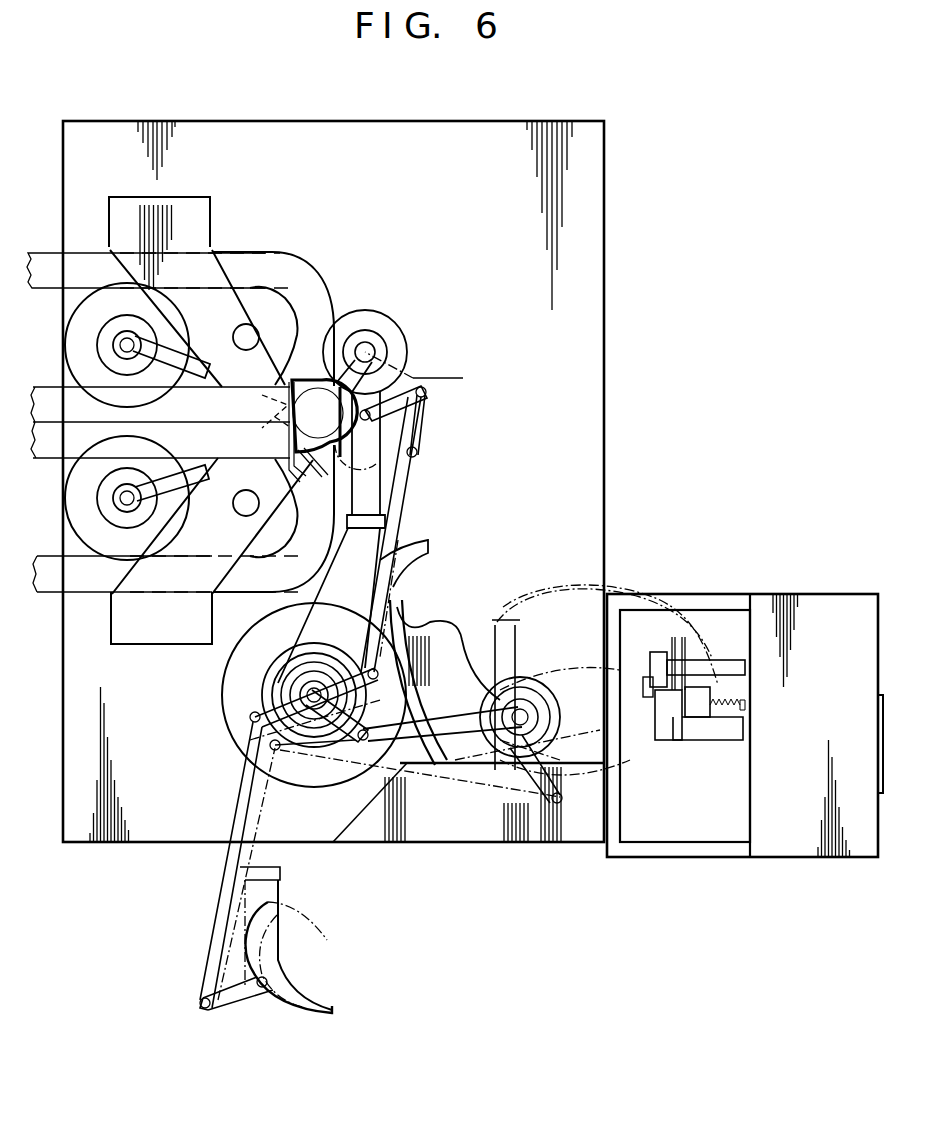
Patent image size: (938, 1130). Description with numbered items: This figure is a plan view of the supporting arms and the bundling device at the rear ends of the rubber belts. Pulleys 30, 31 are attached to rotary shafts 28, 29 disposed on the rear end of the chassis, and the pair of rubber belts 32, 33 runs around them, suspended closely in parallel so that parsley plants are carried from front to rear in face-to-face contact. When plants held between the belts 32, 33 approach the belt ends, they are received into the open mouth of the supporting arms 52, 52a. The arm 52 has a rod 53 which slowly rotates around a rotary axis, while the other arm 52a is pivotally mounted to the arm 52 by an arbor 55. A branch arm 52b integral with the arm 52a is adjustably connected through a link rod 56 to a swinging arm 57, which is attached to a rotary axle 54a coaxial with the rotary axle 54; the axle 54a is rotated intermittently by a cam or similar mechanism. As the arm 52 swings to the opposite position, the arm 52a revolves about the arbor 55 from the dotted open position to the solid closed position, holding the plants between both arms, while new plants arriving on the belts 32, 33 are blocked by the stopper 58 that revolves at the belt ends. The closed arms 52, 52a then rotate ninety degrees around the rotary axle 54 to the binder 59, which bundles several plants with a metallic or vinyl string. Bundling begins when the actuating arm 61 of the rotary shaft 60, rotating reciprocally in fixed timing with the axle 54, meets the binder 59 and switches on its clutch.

The rotary shaft 28 is at (240, 328).
The rotary shaft 29 is at (240, 510).
The pulley 30 is at (294, 318).
The pulley 31 is at (290, 507).
The rubber belt 32 is at (284, 262).
The rubber belt 33 is at (245, 580).
The supporting arm 52 is at (315, 384).
The supporting arm 52a is at (296, 442).
The branch arm 52b is at (400, 418).
The rod 53 is at (358, 590).
The rotary axle 54 is at (278, 690).
The rotary axle 54a is at (314, 683).
The arbor 55 is at (360, 413).
The link rod 56 is at (412, 486).
The swinging arm 57 is at (332, 752).
The stopper 58 is at (256, 410).
The binder 59 is at (718, 680).
The rotary shaft 60 is at (510, 710).
The actuating arm 61 is at (452, 628).